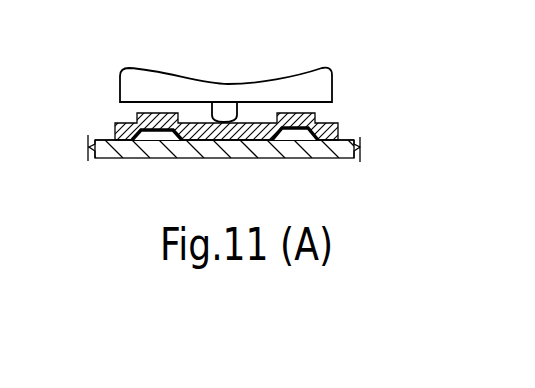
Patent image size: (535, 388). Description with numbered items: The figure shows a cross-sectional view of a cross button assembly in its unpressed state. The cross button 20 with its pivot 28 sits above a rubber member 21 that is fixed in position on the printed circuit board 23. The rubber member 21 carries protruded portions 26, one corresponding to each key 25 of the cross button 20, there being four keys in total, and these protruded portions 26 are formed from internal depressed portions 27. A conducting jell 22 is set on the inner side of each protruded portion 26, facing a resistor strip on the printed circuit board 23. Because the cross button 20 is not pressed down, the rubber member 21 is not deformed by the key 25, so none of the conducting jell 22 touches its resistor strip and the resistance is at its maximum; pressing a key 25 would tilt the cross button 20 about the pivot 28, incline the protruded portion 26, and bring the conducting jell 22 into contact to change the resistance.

The cross button 20 is at (235, 92).
The rubber member 21 is at (338, 124).
The conducting jell 22 is at (152, 136).
The printed circuit board 23 is at (105, 148).
The key 25 is at (308, 85).
The protruded portion 26 is at (310, 113).
The internal depressed portion 27 is at (288, 135).
The pivot 28 is at (225, 110).